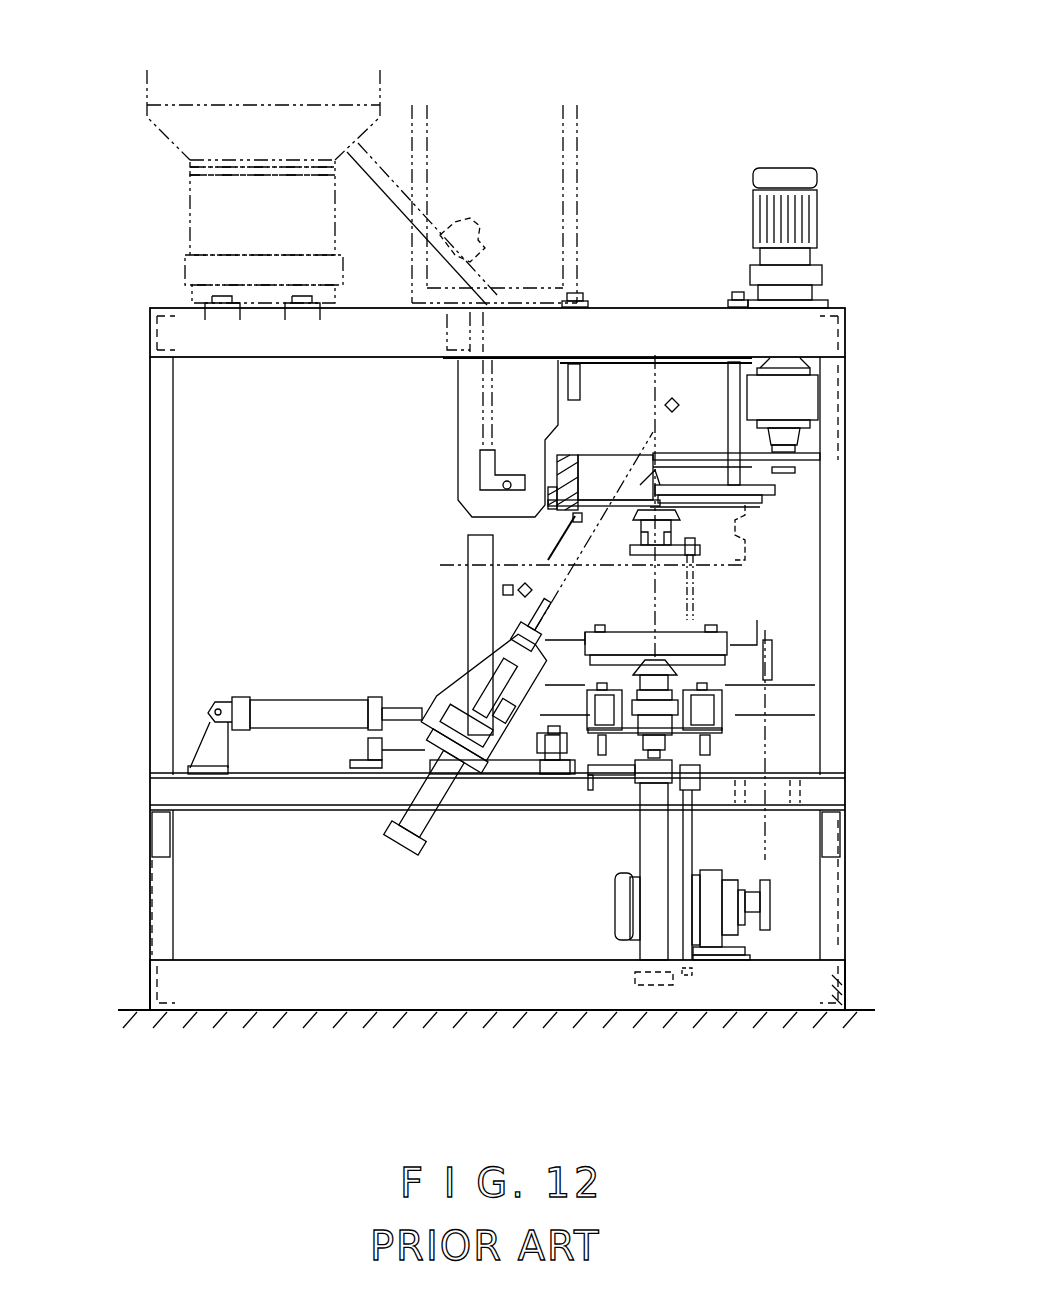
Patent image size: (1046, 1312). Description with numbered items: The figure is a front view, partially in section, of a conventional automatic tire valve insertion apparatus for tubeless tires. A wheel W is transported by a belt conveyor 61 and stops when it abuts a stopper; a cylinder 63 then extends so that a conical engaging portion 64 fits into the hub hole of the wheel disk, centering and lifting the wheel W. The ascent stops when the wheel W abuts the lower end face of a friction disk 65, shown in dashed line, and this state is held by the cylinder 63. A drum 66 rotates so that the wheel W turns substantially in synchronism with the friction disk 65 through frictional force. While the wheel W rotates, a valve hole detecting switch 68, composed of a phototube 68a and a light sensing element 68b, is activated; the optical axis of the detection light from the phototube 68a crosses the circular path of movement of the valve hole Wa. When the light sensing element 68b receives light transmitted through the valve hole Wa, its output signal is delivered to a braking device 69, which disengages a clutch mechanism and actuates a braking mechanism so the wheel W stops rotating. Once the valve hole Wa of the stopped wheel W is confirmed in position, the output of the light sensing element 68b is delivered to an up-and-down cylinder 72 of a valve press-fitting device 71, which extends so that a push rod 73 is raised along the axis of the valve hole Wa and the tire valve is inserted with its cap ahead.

The belt conveyor 61 is at (621, 610).
The cylinder 63 is at (648, 835).
The conical engaging portion 64 is at (660, 650).
The friction disk 65 is at (762, 502).
The drum 66 is at (565, 457).
The valve hole detecting switch 68 is at (645, 438).
The phototube 68a is at (675, 398).
The light sensing element 68b is at (500, 588).
The braking device 69 is at (810, 397).
The valve press-fitting device 71 is at (452, 685).
The up-and-down cylinder 72 is at (395, 818).
The push rod 73 is at (468, 607).
The wheel W is at (748, 548).
The valve hole Wa is at (572, 516).